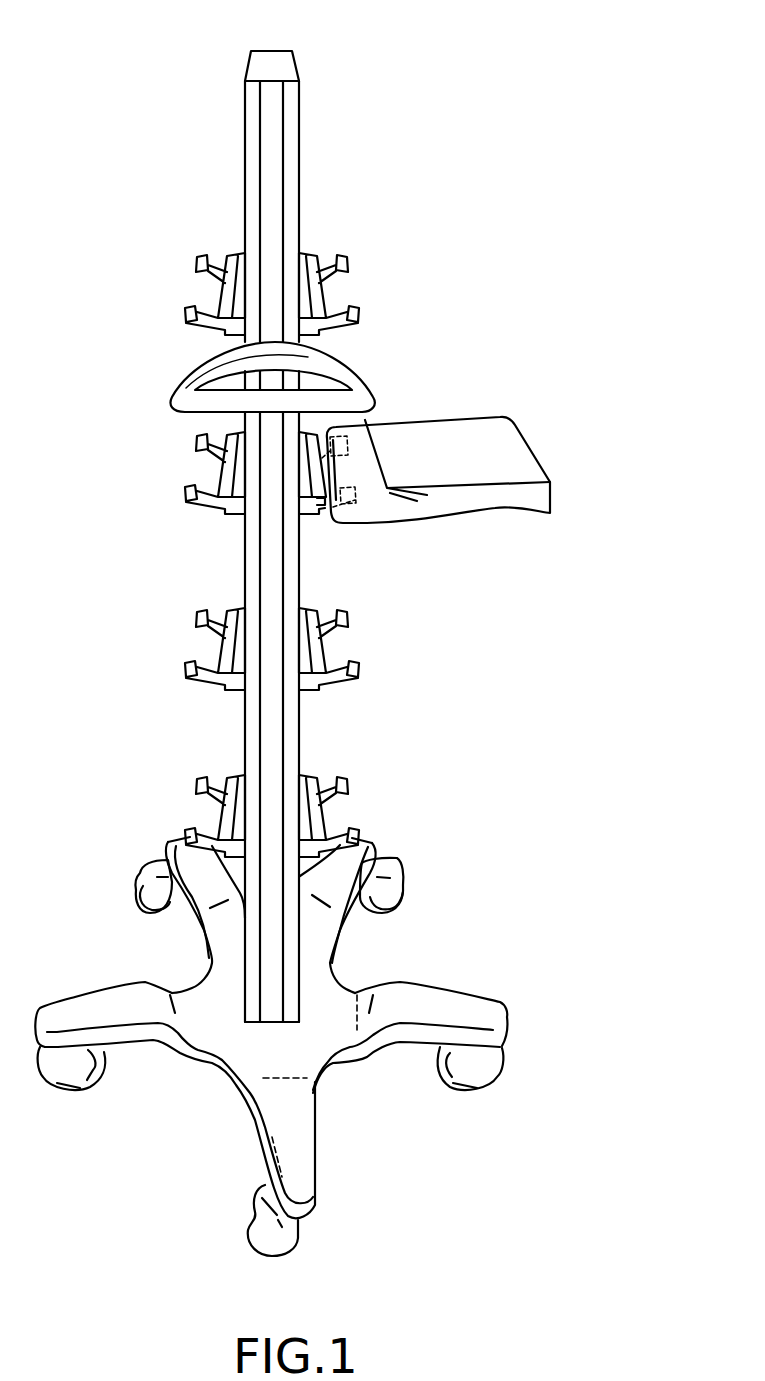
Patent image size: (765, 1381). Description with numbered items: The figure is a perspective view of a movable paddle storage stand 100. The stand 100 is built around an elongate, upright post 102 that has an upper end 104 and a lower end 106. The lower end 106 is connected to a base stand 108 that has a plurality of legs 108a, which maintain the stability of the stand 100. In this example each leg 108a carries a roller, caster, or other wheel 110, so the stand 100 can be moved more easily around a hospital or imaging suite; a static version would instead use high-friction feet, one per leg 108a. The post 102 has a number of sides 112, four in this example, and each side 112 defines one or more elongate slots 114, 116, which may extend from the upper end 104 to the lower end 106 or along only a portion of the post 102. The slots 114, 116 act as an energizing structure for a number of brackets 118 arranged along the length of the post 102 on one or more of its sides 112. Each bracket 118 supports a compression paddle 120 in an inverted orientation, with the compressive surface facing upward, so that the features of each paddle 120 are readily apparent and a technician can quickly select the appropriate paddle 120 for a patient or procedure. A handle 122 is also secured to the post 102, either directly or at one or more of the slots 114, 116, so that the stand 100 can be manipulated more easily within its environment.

The movable paddle storage stand 100 is at (475, 110).
The post 102 is at (283, 65).
The upper end 104 is at (232, 40).
The lower end 106 is at (247, 1043).
The base stand 108 is at (377, 1097).
The leg 108a is at (490, 1020).
The wheel 110 is at (282, 1242).
The side 112 is at (288, 213).
The elongate slot 114 is at (246, 128).
The elongate slot 116 is at (296, 150).
The bracket 118 is at (332, 317).
The compression paddle 120 is at (513, 448).
The handle 122 is at (180, 398).